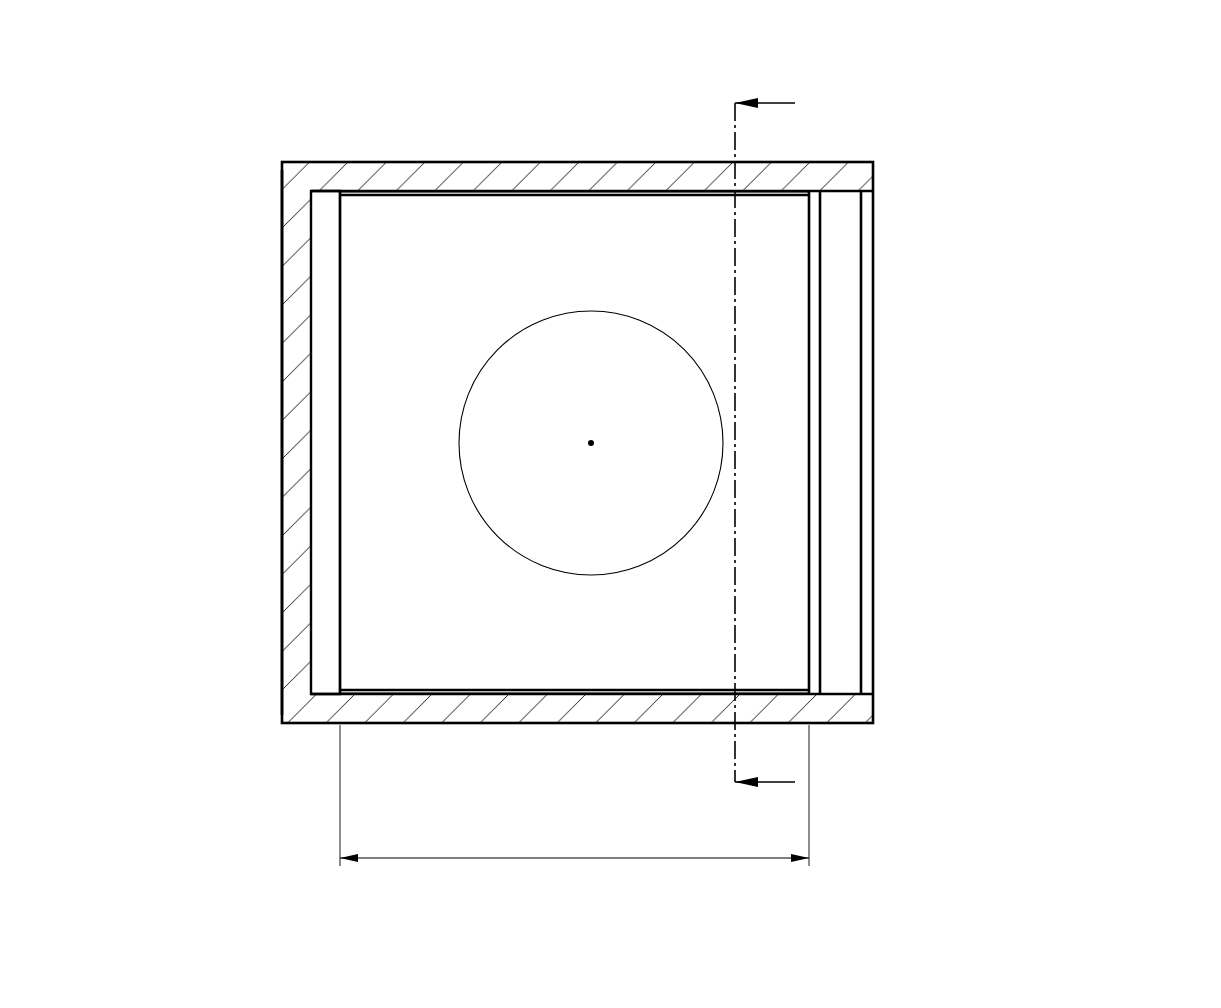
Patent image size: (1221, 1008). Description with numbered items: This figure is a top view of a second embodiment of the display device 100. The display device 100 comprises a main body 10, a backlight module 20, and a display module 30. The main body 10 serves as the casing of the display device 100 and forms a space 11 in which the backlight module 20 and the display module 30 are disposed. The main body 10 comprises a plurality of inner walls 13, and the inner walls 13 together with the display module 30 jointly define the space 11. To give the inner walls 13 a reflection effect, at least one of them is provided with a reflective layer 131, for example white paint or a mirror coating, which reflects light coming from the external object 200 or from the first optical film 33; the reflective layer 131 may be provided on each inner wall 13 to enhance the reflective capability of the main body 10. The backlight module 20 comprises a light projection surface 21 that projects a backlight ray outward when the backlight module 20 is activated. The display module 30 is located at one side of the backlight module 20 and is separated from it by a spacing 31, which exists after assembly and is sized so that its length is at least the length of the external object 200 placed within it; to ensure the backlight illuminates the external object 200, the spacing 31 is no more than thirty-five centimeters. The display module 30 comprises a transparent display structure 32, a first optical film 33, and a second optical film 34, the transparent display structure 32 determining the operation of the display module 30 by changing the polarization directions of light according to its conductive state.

The display device 100 is at (1198, 100).
The main body 10 is at (490, 155).
The space 11 is at (372, 313).
The inner walls 13 is at (617, 190).
The reflective layer 131 is at (445, 693).
The backlight module 20 is at (300, 487).
The light projection surface 21 is at (340, 388).
The external object 200 is at (607, 576).
The display module 30 is at (930, 442).
The spacing 31 is at (574, 795).
The transparent display structure 32 is at (843, 422).
The first optical film 33 is at (817, 507).
The second optical film 34 is at (1003, 518).